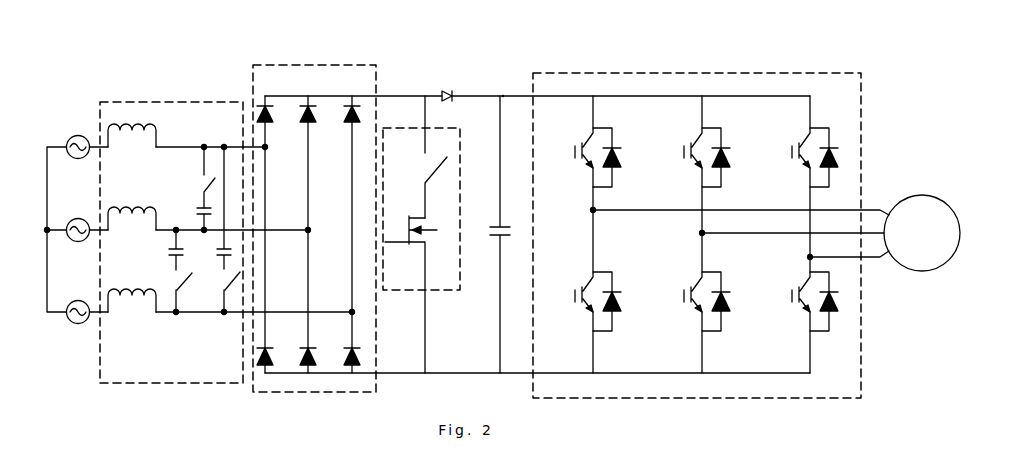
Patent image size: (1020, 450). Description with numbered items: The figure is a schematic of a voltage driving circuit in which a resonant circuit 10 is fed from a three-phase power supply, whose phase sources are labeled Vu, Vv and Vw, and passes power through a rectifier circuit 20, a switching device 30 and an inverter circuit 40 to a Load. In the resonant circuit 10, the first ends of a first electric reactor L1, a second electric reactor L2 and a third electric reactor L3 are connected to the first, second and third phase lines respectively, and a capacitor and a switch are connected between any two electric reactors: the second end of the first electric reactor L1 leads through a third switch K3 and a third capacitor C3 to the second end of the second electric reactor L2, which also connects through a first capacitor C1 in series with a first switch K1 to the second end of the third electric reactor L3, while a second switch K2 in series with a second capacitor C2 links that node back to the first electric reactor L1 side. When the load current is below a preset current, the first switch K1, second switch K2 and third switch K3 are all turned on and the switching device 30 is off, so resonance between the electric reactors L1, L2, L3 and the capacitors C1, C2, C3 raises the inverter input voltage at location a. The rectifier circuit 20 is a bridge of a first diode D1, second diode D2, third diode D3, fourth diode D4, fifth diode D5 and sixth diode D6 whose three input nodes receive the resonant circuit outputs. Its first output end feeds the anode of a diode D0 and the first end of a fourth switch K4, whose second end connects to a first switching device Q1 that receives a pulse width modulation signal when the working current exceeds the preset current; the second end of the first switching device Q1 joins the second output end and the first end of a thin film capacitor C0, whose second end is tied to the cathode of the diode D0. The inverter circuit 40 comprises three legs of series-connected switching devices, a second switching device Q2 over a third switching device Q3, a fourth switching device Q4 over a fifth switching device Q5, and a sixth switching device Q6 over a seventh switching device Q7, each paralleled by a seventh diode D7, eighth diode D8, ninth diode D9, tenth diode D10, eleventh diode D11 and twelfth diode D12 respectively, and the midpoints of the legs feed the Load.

The resonant circuit 10 is at (163, 102).
The rectifier circuit 20 is at (303, 65).
The switching device 30 is at (460, 168).
The inverter circuit 40 is at (665, 73).
The phase U voltage source Vu is at (88, 136).
The phase V voltage source Vv is at (88, 219).
The phase W voltage source Vw is at (88, 302).
The first electric reactor L1 is at (132, 127).
The second electric reactor L2 is at (132, 210).
The third electric reactor L3 is at (132, 292).
The first switch K1 is at (189, 292).
The second switch K2 is at (223, 292).
The third switch K3 is at (196, 177).
The fourth switch K4 is at (424, 157).
The first capacitor C1 is at (166, 250).
The second capacitor C2 is at (214, 208).
The third capacitor C3 is at (194, 217).
The thin film capacitor C0 is at (490, 234).
The diode D0 is at (452, 108).
The first diode D1 is at (274, 126).
The second diode D2 is at (359, 341).
The third diode D3 is at (317, 126).
The fourth diode D4 is at (272, 341).
The fifth diode D5 is at (359, 126).
The sixth diode D6 is at (316, 341).
The seventh diode D7 is at (623, 157).
The eighth diode D8 is at (623, 301).
The ninth diode D9 is at (735, 157).
The tenth diode D10 is at (739, 301).
The eleventh diode D11 is at (838, 176).
The twelfth diode D12 is at (835, 326).
The first switching device Q1 is at (411, 294).
The second switching device Q2 is at (585, 157).
The third switching device Q3 is at (585, 301).
The fourth switching device Q4 is at (694, 157).
The fifth switching device Q5 is at (694, 301).
The sixth switching device Q6 is at (803, 157).
The seventh switching device Q7 is at (807, 301).
The location a is at (503, 86).
The load Load is at (922, 233).